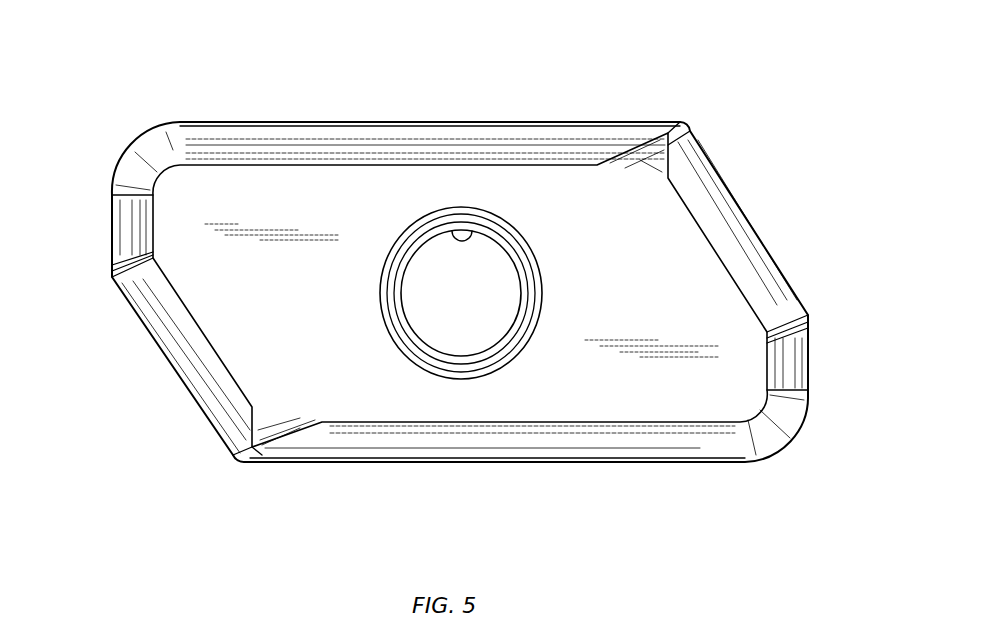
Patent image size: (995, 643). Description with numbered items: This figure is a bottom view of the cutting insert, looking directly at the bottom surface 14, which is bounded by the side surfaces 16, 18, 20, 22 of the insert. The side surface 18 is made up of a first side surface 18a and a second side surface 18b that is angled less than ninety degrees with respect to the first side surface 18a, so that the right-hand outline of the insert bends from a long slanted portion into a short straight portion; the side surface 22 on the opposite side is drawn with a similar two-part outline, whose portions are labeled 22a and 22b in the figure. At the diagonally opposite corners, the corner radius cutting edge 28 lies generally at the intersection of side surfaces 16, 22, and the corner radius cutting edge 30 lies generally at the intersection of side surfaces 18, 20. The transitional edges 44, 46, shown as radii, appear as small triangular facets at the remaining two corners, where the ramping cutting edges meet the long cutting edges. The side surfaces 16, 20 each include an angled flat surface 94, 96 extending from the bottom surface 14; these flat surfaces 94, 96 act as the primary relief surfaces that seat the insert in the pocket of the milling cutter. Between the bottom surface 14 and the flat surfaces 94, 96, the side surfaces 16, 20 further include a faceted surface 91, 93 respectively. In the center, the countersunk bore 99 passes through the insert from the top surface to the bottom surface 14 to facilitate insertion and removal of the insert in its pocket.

The bottom surface 14 is at (415, 197).
The side surface 16 is at (338, 117).
The side surface 18 is at (779, 265).
The first side surface 18a is at (728, 217).
The second side surface 18b is at (790, 352).
The side surface 20 is at (573, 469).
The side surface 22 is at (137, 324).
The angled portion of left side edge 22a is at (188, 355).
The straight portion of left side edge 22b is at (125, 230).
The corner radius cutting edge 28 is at (138, 140).
The corner radius cutting edge 30 is at (790, 442).
The transitional edge 44 is at (236, 462).
The transitional edge 46 is at (688, 135).
The faceted surface 91 is at (640, 158).
The faceted surface 93 is at (280, 428).
The angled flat surface 94 is at (286, 145).
The angled flat surface 96 is at (405, 440).
The countersunk bore 99 is at (470, 236).